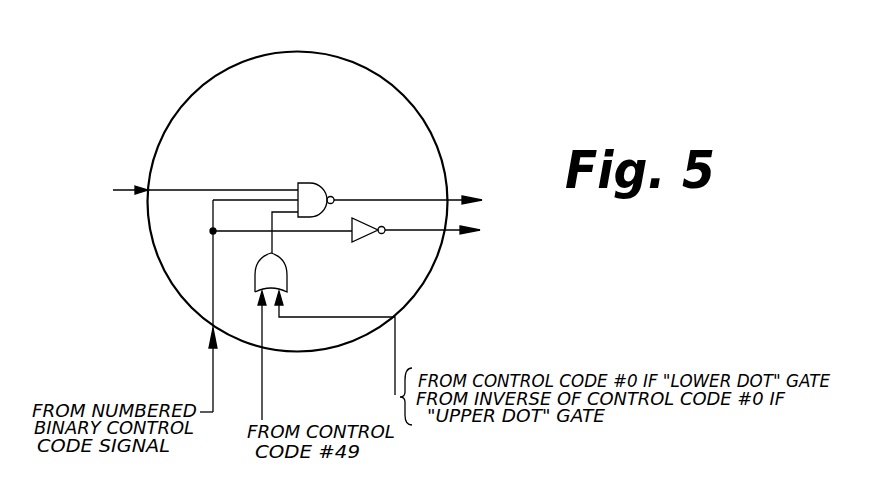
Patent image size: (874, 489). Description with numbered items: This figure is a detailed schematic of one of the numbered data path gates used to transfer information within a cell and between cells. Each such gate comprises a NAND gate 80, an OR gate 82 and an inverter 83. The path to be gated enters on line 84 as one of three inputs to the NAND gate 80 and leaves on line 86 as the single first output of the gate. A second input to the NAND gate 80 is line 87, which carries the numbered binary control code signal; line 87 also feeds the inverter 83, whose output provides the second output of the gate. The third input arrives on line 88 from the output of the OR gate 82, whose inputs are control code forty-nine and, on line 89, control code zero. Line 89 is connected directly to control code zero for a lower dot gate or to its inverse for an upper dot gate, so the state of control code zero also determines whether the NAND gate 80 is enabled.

The NAND gate 80 is at (318, 183).
The OR gate 82 is at (287, 268).
The inverter 83 is at (385, 236).
The line 84 is at (124, 189).
The line 86 is at (455, 196).
The line 87 is at (213, 247).
The line 88 is at (271, 252).
The line 89 is at (313, 317).